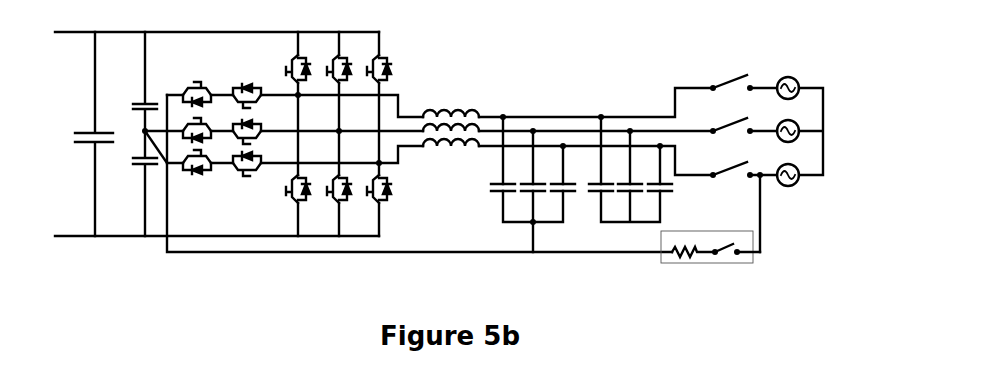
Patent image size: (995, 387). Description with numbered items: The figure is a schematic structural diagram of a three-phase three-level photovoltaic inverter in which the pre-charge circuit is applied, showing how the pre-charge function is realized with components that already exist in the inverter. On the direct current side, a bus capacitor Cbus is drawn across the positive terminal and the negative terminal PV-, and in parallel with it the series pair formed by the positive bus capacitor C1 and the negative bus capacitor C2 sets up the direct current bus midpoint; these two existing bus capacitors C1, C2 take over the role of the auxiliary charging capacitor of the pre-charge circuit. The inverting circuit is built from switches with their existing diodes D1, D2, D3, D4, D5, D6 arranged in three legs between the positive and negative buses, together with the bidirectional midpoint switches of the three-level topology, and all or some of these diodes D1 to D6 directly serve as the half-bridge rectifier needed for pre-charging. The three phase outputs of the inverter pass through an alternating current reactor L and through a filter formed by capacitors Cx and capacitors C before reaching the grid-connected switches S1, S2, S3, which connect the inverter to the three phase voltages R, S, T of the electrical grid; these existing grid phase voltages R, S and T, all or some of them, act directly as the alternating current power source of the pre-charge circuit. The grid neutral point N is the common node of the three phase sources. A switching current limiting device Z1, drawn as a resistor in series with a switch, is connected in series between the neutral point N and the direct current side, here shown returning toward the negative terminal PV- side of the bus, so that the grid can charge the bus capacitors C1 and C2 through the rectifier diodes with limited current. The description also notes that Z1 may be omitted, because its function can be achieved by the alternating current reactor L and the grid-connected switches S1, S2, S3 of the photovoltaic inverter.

The negative direct current side PV- is at (217, 225).
The DC bus capacitor Cbus is at (85, 134).
The positive bus capacitor C1 is at (137, 81).
The negative bus capacitor C2 is at (137, 183).
The diode D1 is at (304, 68).
The diode D2 is at (304, 189).
The diode D3 is at (345, 68).
The diode D4 is at (345, 189).
The diode D5 is at (385, 68).
The diode D6 is at (386, 189).
The filter inductors L is at (451, 118).
The X filter capacitors Cx is at (529, 183).
The filter capacitors C is at (630, 168).
The grid relay switch, phase R S1 is at (724, 78).
The grid relay switch, phase S S2 is at (724, 123).
The grid relay switch, phase T S3 is at (729, 168).
The phase voltage R is at (788, 78).
The phase voltage S is at (788, 121).
The phase voltage T is at (788, 167).
The neutral point N is at (820, 131).
The switching current limiting device Z1 is at (710, 256).